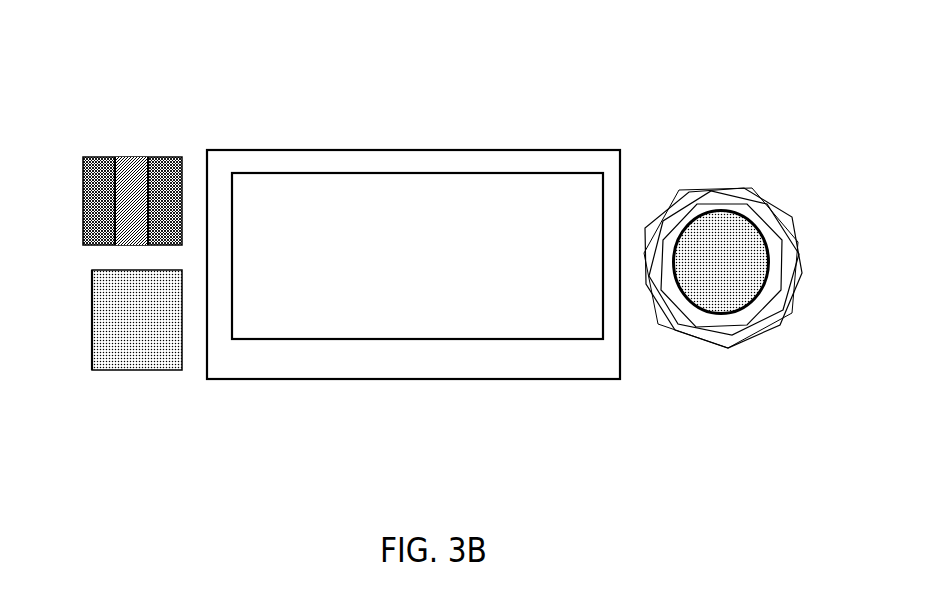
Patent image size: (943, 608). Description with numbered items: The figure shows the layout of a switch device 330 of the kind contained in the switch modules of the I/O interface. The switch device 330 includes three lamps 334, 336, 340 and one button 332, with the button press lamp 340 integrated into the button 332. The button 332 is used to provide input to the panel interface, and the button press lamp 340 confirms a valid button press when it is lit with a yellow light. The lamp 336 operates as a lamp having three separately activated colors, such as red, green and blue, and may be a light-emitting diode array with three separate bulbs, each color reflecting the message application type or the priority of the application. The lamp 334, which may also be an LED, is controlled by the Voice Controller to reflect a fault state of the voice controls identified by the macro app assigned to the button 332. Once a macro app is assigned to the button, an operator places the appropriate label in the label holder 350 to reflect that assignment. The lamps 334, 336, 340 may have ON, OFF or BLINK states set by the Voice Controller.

The switch device 330 is at (483, 78).
The button 332 is at (748, 313).
The lamp 334 is at (128, 370).
The lamp 336 is at (123, 157).
The button press lamp 340 is at (727, 247).
The label holder 350 is at (492, 215).